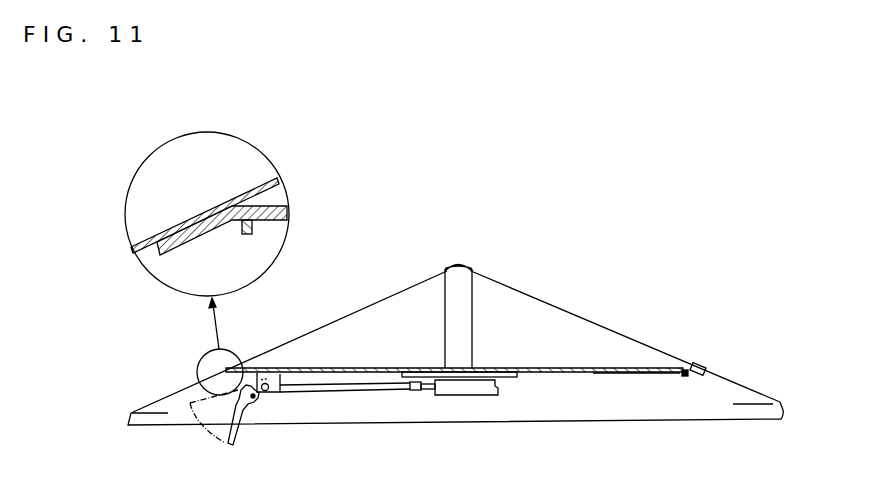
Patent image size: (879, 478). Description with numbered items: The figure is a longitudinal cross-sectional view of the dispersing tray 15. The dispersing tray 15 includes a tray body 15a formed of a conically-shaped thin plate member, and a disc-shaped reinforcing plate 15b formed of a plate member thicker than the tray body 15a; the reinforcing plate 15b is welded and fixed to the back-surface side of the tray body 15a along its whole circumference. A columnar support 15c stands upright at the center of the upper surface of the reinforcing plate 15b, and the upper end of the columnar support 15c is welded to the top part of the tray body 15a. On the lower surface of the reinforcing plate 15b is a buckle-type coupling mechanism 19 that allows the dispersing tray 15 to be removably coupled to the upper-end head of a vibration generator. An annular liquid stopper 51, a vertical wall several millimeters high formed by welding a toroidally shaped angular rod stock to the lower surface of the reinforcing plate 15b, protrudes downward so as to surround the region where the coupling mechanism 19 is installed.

The dispersing tray 15 is at (455, 291).
The tray body 15a is at (356, 311).
The reinforcing plate 15b is at (387, 367).
The columnar support 15c is at (473, 336).
The liquid stopper 51 is at (687, 378).
The coupling mechanism 19 is at (352, 399).